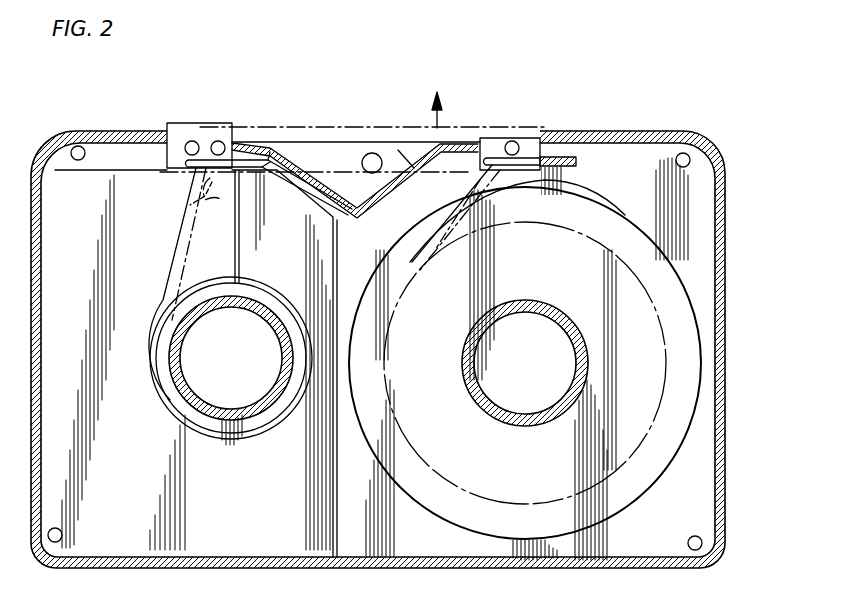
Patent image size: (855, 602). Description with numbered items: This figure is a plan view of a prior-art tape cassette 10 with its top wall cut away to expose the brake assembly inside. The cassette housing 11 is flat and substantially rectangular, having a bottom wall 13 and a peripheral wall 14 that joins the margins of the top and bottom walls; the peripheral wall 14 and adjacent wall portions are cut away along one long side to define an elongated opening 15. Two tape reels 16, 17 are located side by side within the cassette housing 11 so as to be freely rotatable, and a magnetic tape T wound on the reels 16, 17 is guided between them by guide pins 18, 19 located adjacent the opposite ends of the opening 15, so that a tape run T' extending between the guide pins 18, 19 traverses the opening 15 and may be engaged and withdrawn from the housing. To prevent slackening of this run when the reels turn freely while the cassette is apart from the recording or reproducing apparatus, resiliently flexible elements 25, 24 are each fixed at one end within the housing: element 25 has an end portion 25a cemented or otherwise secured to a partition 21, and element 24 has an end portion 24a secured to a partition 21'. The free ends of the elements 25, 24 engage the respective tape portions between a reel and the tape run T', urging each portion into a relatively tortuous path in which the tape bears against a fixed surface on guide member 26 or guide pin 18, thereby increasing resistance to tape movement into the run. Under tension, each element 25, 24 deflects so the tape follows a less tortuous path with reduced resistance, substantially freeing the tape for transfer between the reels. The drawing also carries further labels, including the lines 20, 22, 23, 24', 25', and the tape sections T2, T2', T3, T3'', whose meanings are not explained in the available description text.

The cassette 10 is at (746, 300).
The cassette housing 11 is at (732, 246).
The bottom wall 13 is at (717, 198).
The peripheral wall 14 is at (727, 474).
The opening 15 is at (388, 140).
The tape reel 16 is at (545, 300).
The tape reel 17 is at (262, 420).
The guide pin 18 is at (512, 140).
The guide pin 19 is at (220, 141).
The tape path 20 is at (256, 127).
The partition 21 is at (355, 199).
The partition 21' is at (586, 160).
The guide roller 22 is at (366, 155).
The guide 23 is at (414, 145).
The resiliently flexible element 24 is at (541, 131).
The spring end 24' is at (474, 213).
The end portion 24a is at (560, 182).
The resiliently flexible element 25 is at (269, 189).
The spring end 25' is at (204, 206).
The end portion 25a is at (305, 195).
The guide member 26 is at (186, 141).
The magnetic tape T is at (525, 363).
The tape run T' is at (372, 101).
The tape section T2 is at (459, 220).
The tape section T2' is at (457, 228).
The tape section T3 is at (162, 284).
The tape section T3'' is at (197, 244).